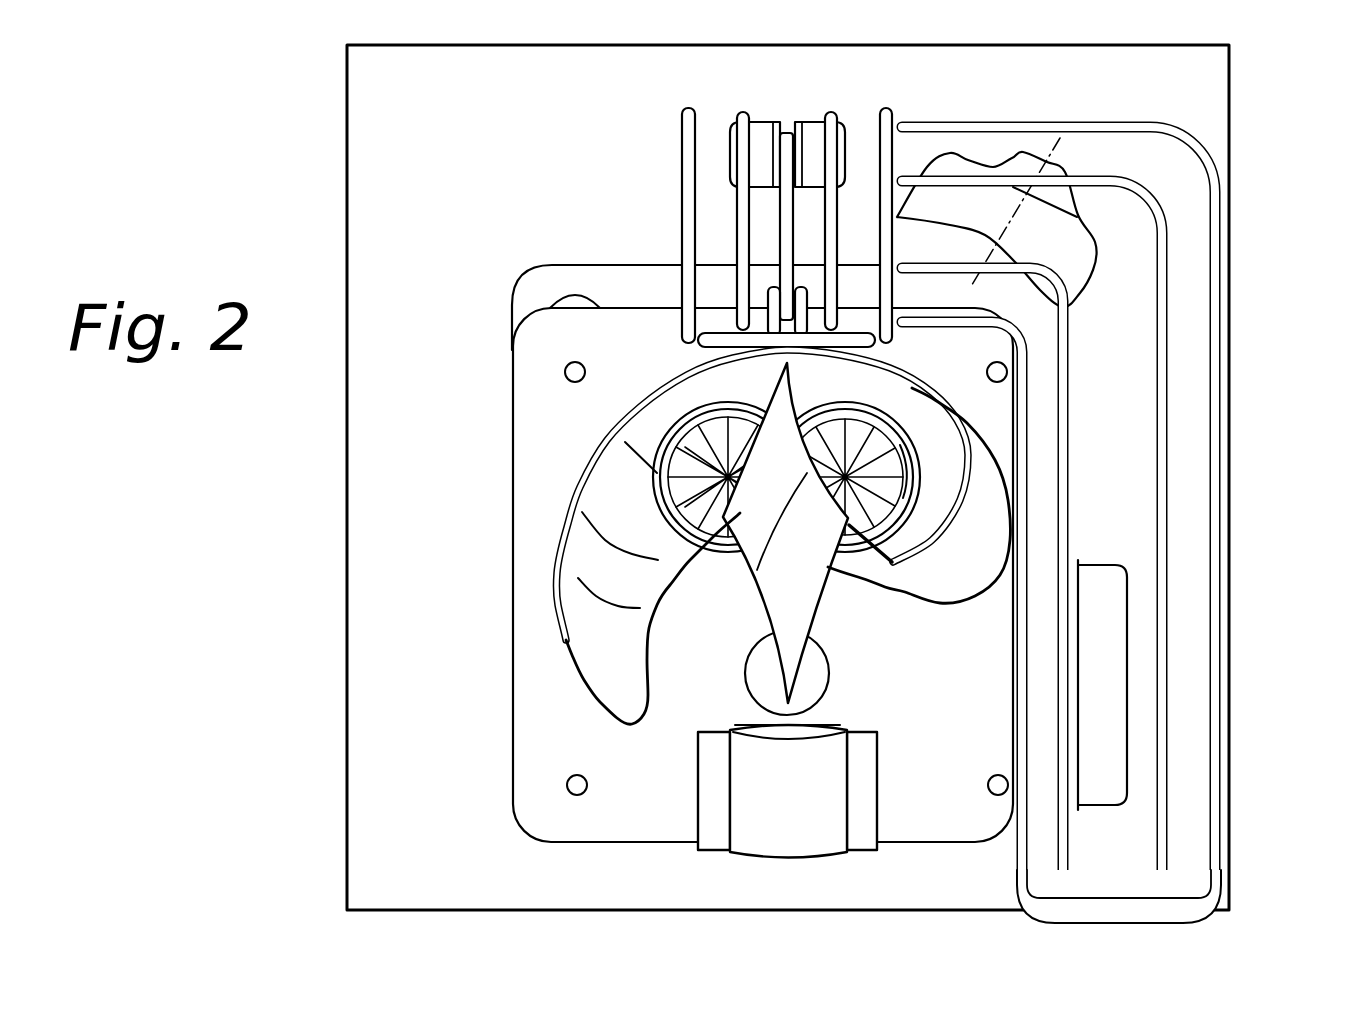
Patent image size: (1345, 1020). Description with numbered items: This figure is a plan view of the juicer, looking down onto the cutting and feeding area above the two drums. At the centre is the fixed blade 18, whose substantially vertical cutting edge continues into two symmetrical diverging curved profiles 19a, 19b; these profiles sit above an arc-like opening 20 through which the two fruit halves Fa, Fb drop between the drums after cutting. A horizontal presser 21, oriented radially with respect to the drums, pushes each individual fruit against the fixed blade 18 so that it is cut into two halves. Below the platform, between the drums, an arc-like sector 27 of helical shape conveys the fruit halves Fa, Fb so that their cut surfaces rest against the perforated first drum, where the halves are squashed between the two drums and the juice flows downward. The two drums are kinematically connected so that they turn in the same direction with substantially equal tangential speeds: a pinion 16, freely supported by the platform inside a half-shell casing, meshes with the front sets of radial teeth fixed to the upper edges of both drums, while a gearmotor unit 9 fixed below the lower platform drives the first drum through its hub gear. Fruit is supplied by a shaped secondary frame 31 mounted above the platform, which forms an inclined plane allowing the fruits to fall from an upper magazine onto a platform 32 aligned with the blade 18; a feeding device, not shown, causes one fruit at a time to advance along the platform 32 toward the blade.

The gearmotor unit 9 is at (1067, 248).
The pinion 16 is at (813, 788).
The fixed blade 18 is at (743, 545).
The diverging curved profile 19a is at (708, 369).
The diverging curved profile 19b is at (845, 477).
The arc-like opening 20 is at (913, 590).
The horizontal presser 21 is at (780, 331).
The arc-like sector 27 is at (943, 498).
The shaped secondary frame 31 is at (957, 125).
The platform 32 is at (787, 218).
The fruit half Fa is at (693, 468).
The fruit half Fb is at (862, 537).